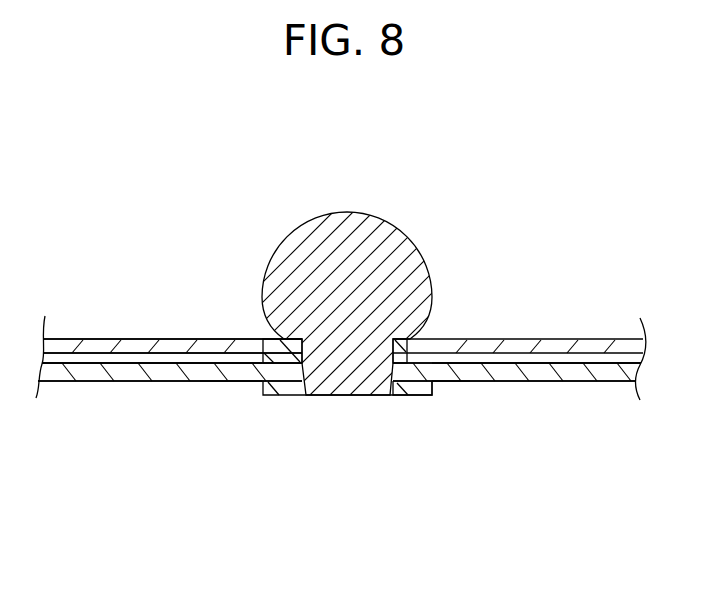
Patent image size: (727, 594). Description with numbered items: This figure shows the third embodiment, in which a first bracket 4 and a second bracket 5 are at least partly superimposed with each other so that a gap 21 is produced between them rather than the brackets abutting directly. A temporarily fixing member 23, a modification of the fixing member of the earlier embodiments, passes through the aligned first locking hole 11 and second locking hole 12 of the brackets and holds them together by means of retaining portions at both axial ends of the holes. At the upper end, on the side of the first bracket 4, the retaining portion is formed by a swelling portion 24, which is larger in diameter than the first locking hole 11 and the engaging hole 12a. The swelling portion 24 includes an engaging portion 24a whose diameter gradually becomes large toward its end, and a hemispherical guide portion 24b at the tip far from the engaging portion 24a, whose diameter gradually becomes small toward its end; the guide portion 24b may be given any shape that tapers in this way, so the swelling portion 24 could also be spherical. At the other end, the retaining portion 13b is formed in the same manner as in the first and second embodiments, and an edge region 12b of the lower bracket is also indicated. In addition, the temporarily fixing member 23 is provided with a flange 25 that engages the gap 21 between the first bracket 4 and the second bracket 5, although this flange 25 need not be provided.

The first bracket 4 is at (545, 338).
The second bracket 5 is at (85, 377).
The first locking hole 11 is at (299, 358).
The second locking hole 12 is at (280, 391).
The engaging hole 12a is at (393, 396).
The wiring layer opening edge 12b is at (237, 381).
The retaining portion 13b is at (412, 383).
The gap 21 is at (568, 377).
The temporarily fixing member 23 is at (361, 252).
The swelling portion 24 is at (361, 252).
The engaging portion 24a is at (272, 333).
The guide portion 24b is at (378, 258).
The flange 25 is at (419, 338).